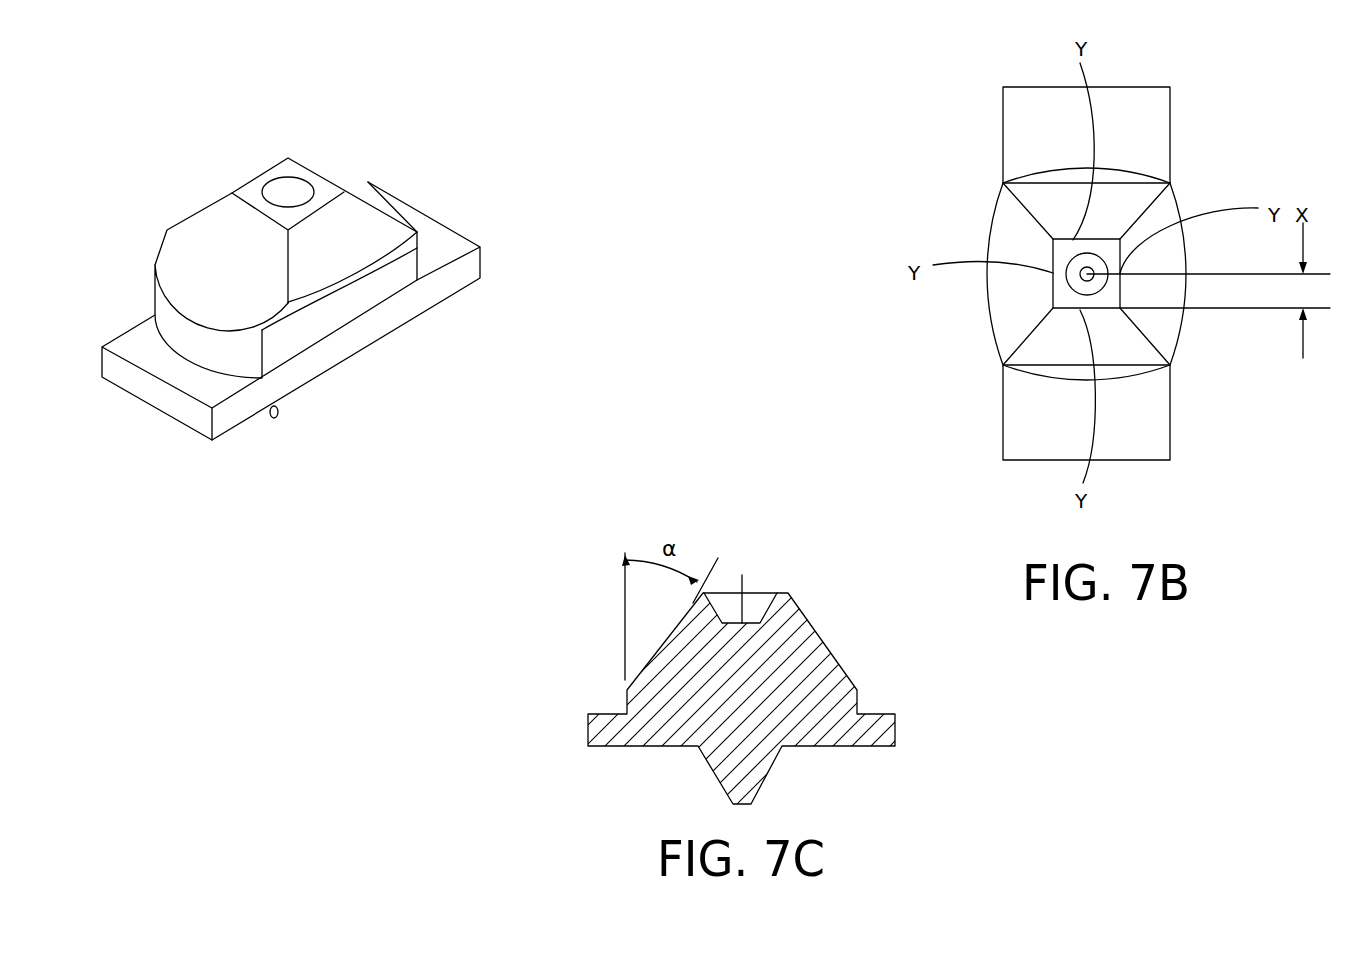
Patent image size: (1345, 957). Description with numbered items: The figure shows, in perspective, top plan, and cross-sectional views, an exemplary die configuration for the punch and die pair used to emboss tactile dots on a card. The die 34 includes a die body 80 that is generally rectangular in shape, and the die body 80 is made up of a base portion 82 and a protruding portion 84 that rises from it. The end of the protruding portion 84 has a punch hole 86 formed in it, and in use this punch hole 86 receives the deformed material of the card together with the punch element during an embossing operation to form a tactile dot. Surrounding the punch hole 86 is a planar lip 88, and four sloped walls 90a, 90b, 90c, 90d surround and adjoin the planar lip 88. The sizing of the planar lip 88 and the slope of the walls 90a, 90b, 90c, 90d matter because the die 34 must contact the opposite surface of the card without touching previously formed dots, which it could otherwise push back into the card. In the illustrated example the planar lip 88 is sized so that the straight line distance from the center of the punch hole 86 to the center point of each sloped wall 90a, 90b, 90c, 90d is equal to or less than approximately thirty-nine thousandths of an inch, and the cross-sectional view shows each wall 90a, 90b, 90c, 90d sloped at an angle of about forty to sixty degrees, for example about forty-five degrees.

The die 34 is at (118, 239).
The die body 80 is at (372, 333).
The base portion 82 is at (153, 378).
The protruding portion 84 is at (407, 267).
The punch hole 86 is at (294, 190).
The planar lip 88 is at (250, 188).
The sloped wall 90a is at (183, 273).
The sloped wall 90b is at (345, 257).
The sloped wall 90c is at (372, 197).
The sloped wall 90d is at (203, 208).